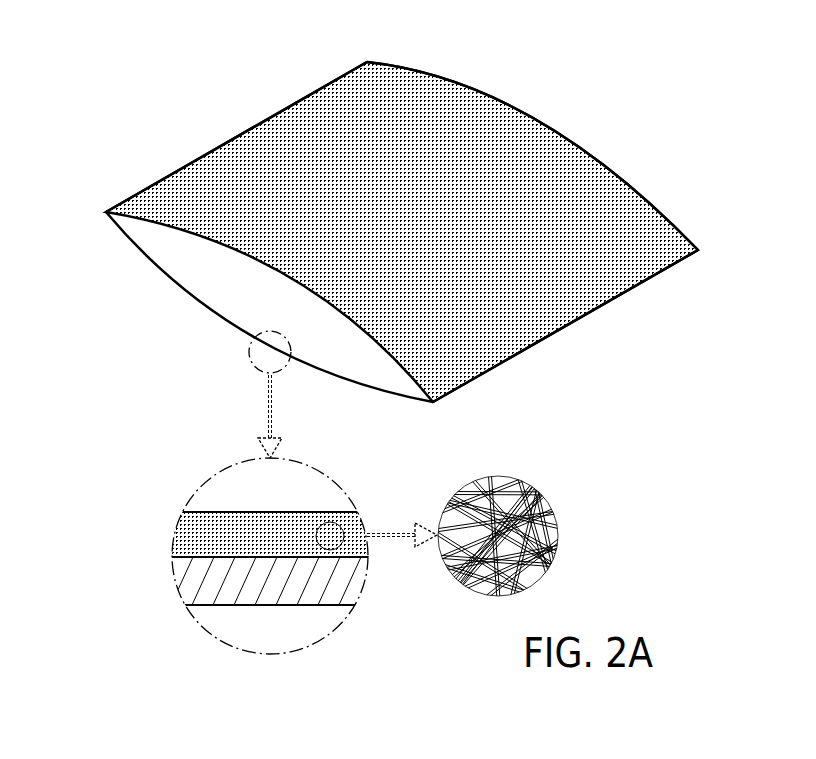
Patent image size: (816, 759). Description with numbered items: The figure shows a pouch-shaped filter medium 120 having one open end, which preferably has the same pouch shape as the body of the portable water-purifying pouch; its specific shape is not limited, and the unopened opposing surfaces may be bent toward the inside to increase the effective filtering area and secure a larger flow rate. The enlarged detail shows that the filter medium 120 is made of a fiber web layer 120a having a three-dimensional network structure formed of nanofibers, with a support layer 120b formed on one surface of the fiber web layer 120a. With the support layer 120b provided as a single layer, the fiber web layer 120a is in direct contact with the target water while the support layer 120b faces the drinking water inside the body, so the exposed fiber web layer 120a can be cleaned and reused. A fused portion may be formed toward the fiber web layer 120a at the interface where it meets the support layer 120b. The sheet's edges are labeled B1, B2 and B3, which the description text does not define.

The filter medium 120 is at (656, 109).
The fiber web layer 120a is at (173, 536).
The support layer 120b is at (190, 581).
The first boundary edge of the sheet B1 is at (288, 106).
The second boundary edge of the sheet B2 is at (533, 118).
The third boundary edge of the sheet B3 is at (645, 282).